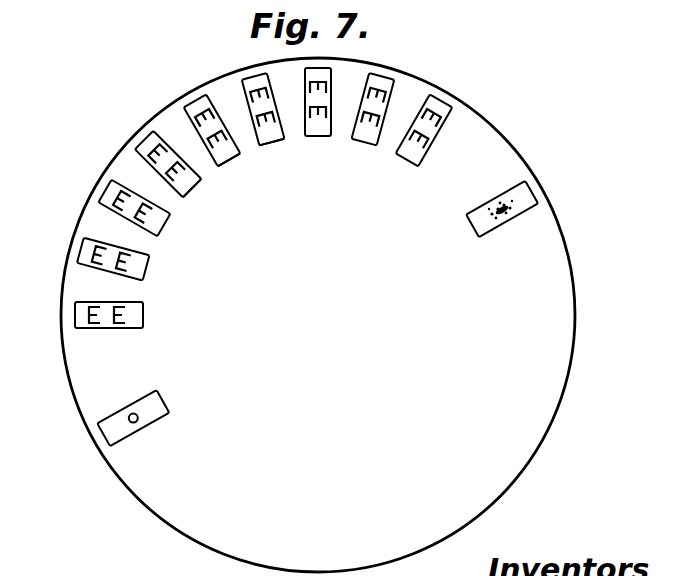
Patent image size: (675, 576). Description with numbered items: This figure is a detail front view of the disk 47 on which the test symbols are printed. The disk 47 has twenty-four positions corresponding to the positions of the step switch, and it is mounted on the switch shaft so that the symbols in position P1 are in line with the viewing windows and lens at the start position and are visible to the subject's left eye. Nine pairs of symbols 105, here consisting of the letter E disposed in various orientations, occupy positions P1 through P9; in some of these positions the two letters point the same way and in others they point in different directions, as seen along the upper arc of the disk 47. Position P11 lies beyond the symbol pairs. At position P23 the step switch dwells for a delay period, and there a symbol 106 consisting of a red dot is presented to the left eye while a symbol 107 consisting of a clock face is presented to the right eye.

The disk 47 is at (477, 173).
The position P1 is at (75, 315).
The position P9 is at (450, 97).
The position P11 is at (528, 220).
The position P23 is at (128, 418).
The pairs of symbols 105 is at (255, 168).
The symbol 106 is at (156, 392).
The symbol 107 is at (479, 238).